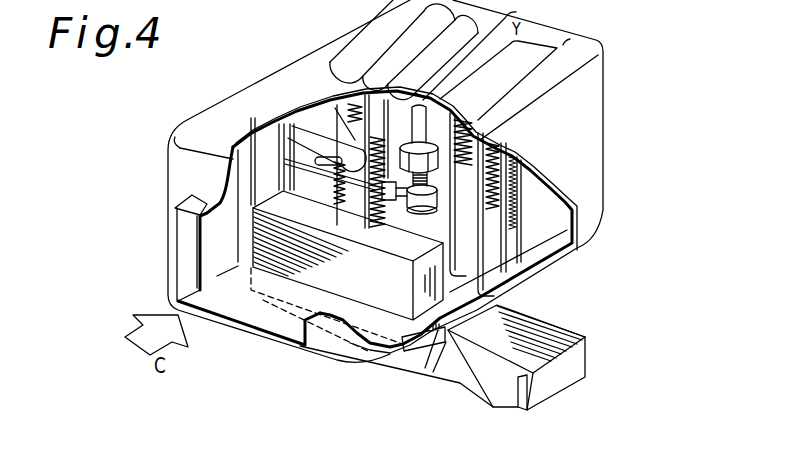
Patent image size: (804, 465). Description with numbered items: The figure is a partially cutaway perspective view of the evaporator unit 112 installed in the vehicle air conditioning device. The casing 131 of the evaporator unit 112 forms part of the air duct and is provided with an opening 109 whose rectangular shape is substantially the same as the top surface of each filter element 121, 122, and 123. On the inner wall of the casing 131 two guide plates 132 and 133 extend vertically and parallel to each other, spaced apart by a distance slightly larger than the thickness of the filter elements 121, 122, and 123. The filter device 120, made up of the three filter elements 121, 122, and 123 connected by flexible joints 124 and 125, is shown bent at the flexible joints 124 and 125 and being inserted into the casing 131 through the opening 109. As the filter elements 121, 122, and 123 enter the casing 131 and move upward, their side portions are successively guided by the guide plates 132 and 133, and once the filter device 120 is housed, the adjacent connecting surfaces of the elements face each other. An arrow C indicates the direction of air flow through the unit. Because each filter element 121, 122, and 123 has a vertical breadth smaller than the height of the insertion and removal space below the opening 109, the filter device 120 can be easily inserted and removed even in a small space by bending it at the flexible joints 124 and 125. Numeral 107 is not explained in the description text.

The side panel 107 is at (540, 234).
The opening 109 is at (493, 302).
The evaporator unit 112 is at (606, 195).
The filter device 120 is at (430, 396).
The filter element 121 is at (388, 292).
The filter element 122 is at (492, 382).
The filter element 123 is at (562, 388).
The flexible joint 124 is at (423, 342).
The flexible joint 125 is at (524, 390).
The casing 131 is at (303, 56).
The guide plate 132 is at (240, 150).
The guide plate 133 is at (280, 125).